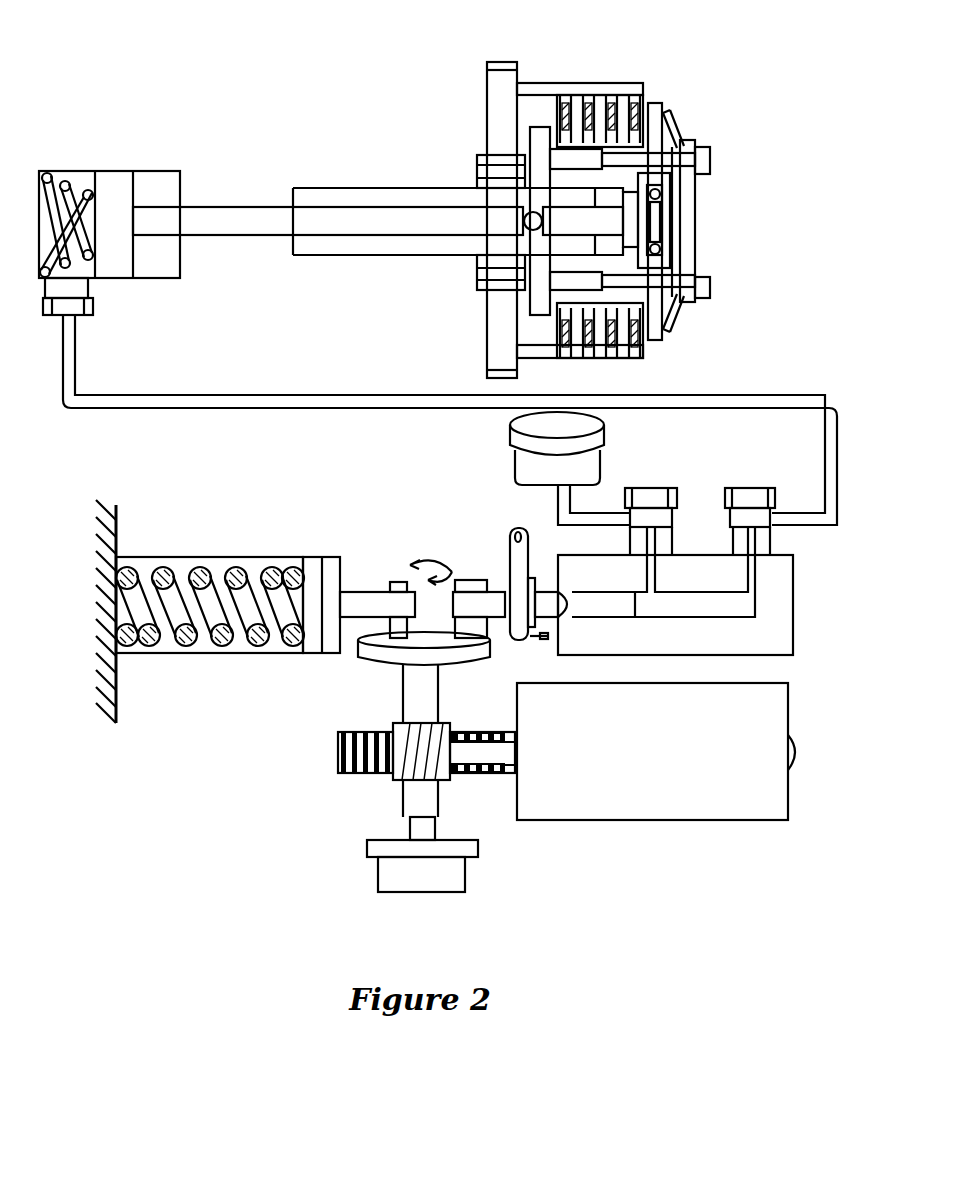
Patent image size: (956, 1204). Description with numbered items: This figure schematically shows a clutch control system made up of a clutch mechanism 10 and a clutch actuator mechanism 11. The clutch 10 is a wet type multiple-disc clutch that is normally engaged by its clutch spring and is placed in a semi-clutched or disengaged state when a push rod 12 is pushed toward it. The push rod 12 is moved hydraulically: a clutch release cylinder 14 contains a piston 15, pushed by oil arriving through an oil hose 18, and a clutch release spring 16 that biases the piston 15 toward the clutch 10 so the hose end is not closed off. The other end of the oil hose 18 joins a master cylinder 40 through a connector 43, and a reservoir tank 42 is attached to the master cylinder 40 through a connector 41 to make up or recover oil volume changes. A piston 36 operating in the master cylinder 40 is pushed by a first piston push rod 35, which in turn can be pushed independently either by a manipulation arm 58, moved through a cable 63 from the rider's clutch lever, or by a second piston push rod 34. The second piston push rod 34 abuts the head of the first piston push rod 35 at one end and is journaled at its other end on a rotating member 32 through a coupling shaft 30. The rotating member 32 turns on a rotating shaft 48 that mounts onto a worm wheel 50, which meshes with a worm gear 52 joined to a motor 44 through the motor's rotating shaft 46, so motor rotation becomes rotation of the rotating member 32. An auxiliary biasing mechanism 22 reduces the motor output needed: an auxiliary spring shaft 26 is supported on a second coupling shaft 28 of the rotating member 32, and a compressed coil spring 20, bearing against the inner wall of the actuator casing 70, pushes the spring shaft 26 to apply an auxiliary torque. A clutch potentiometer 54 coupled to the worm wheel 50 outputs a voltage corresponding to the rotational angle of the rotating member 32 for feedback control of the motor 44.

The clutch mechanism 10 is at (745, 200).
The clutch actuator mechanism 11 is at (218, 798).
The push rod 12 is at (235, 223).
The clutch release cylinder 14 is at (157, 171).
The piston 15 is at (115, 272).
The clutch release spring 16 is at (57, 171).
The oil hose 18 is at (262, 410).
The coil spring 20 is at (160, 570).
The auxiliary biasing mechanism 22 is at (253, 657).
The auxiliary spring shaft 26 is at (357, 597).
The second coupling shaft 28 is at (398, 582).
The coupling shaft 30 is at (463, 580).
The rotating member 32 is at (358, 672).
The second piston push rod 34 is at (497, 597).
The first piston push rod 35 is at (560, 592).
The piston 36 is at (598, 615).
The master cylinder 40 is at (778, 633).
The connector 41 is at (650, 486).
The reservoir tank 42 is at (510, 455).
The connector 43 is at (748, 486).
The motor 44 is at (650, 822).
The rotating shaft of the motor 46 is at (512, 750).
The rotating shaft 48 is at (430, 707).
The worm wheel 50 is at (340, 776).
The worm gear 52 is at (450, 776).
The clutch potentiometer 54 is at (466, 876).
The manipulation arm 58 is at (528, 540).
The cable 63 is at (530, 645).
The actuator casing 70 is at (116, 700).